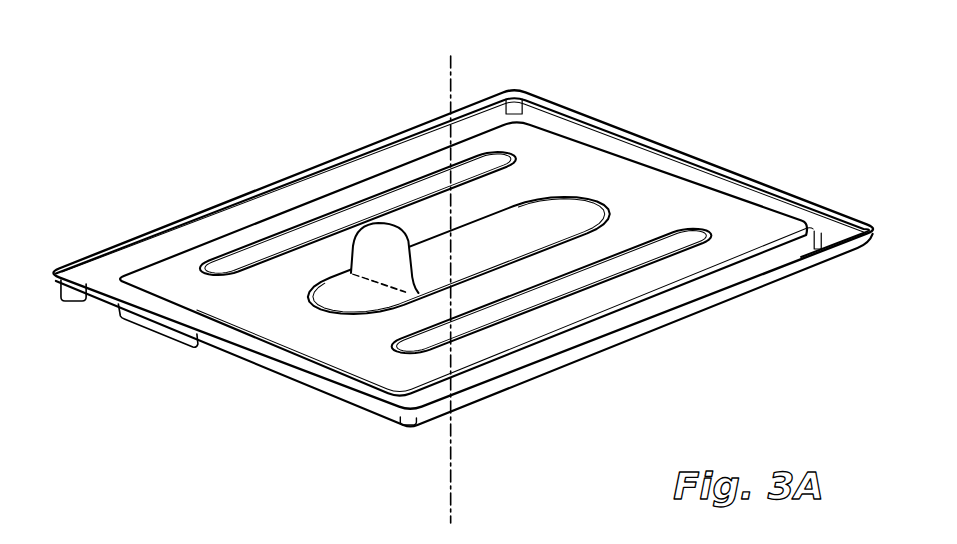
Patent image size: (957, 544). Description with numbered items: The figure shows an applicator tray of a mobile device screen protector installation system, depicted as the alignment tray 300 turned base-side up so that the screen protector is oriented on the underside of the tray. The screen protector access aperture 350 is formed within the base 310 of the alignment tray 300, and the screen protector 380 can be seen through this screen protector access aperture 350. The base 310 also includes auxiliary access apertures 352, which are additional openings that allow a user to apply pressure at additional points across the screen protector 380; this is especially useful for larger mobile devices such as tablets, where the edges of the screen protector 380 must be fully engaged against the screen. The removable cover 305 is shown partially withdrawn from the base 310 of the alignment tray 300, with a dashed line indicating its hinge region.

The alignment tray 300 is at (757, 89).
The removable cover 305 is at (367, 222).
The base 310 is at (548, 148).
The screen protector access aperture 350 is at (348, 287).
The auxiliary access apertures 352 is at (247, 259).
The screen protector 380 is at (372, 300).